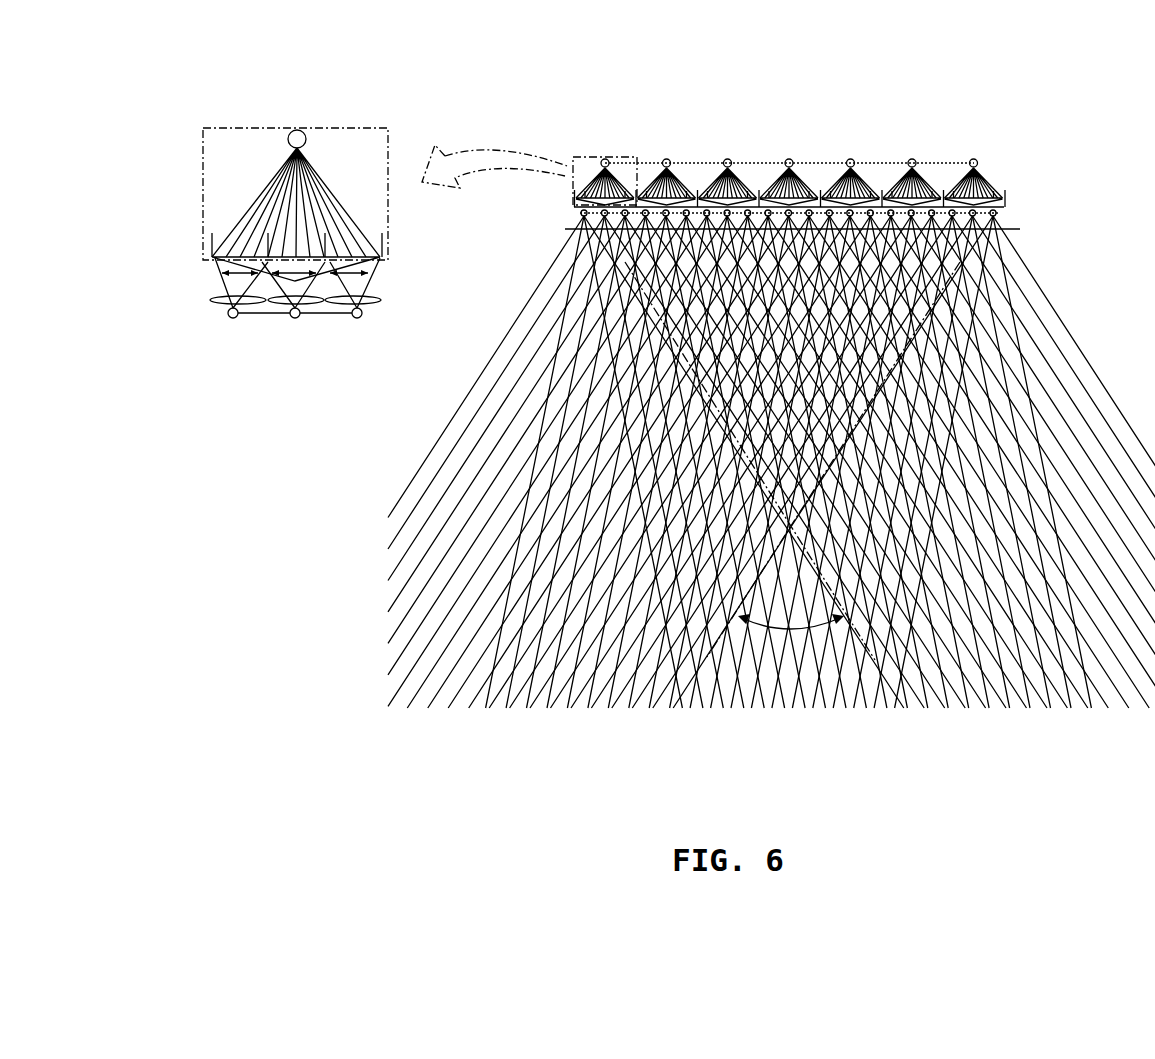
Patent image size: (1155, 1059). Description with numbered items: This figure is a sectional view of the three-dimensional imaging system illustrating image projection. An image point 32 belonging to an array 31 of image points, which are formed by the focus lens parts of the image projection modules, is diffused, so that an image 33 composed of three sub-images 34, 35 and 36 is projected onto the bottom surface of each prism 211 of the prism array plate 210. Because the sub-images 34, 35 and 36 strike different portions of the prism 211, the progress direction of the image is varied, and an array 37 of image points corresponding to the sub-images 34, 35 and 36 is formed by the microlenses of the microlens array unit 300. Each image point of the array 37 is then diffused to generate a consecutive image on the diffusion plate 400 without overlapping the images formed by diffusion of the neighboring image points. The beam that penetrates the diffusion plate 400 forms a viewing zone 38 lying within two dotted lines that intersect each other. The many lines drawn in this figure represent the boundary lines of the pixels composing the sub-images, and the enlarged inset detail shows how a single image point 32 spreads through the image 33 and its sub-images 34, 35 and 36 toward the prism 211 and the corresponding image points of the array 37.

The array of image points 31 is at (880, 162).
The image point 32 is at (297, 130).
The image 33 is at (243, 258).
The sub-image 34 is at (268, 260).
The sub-image 35 is at (297, 278).
The sub-image 36 is at (352, 294).
The array of image points 37 is at (330, 316).
The viewing zone 38 is at (788, 630).
The prism array plate 210 is at (1003, 199).
The prism 211 is at (327, 260).
The microlens array unit 300 is at (771, 182).
The diffusion plate 400 is at (1022, 258).